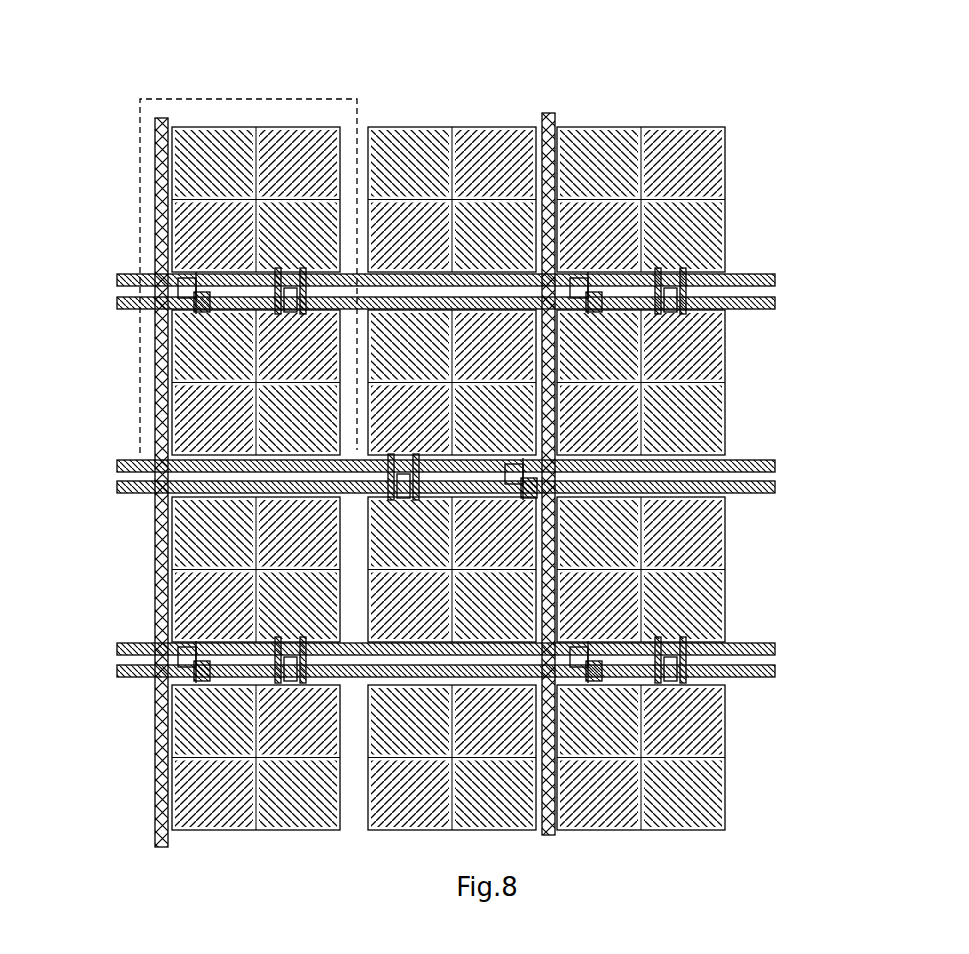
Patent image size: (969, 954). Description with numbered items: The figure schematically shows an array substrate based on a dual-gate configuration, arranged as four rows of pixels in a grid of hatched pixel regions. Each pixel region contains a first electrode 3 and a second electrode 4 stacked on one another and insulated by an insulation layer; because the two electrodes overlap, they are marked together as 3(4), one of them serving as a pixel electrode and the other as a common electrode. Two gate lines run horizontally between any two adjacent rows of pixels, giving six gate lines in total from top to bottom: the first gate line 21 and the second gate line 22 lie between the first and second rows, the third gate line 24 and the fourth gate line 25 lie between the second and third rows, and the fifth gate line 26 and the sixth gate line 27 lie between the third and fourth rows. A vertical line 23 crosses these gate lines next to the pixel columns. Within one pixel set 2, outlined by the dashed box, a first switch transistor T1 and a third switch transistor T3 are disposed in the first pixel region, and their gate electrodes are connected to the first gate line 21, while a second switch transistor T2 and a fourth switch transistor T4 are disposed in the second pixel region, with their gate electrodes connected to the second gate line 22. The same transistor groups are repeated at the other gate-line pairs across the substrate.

The pixel set 2 is at (212, 99).
The first electrode 3 is at (665, 157).
The second electrode 4 is at (698, 128).
The first gate line 21 is at (735, 280).
The second gate line 22 is at (773, 300).
The data line 23 is at (552, 122).
The third gate line 24 is at (768, 466).
The fourth gate line 25 is at (770, 488).
The fifth gate line 26 is at (750, 645).
The sixth gate line 27 is at (768, 668).
The first switch transistor T1 is at (182, 276).
The second switch transistor T2 is at (215, 312).
The third switch transistor T3 is at (290, 270).
The fourth switch transistor T4 is at (310, 312).